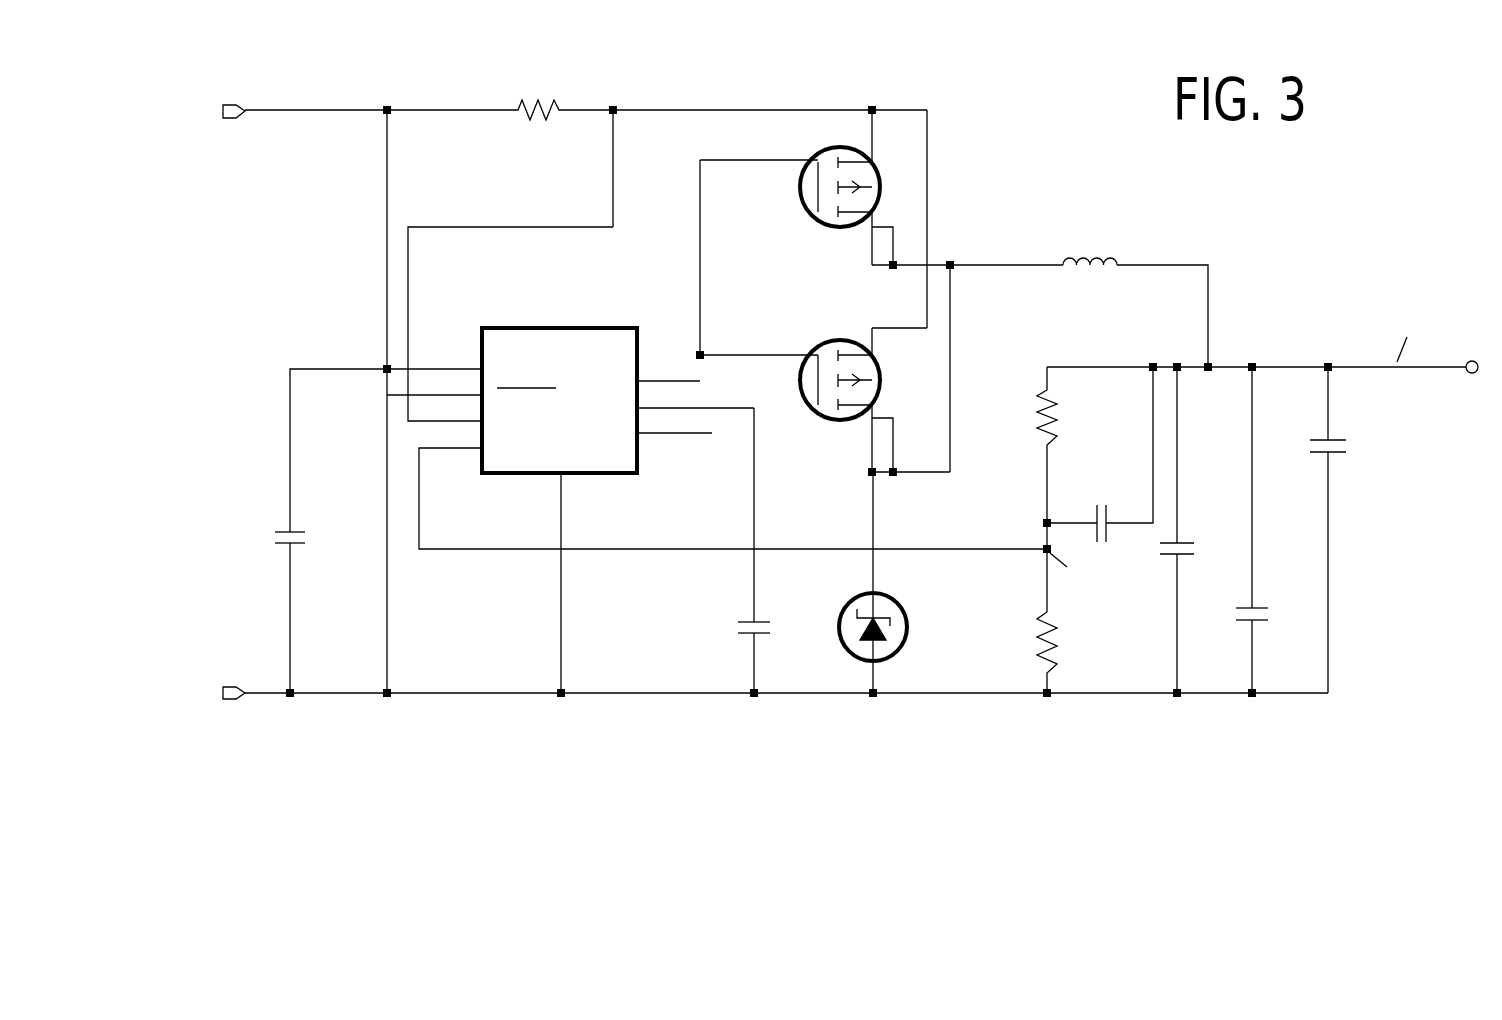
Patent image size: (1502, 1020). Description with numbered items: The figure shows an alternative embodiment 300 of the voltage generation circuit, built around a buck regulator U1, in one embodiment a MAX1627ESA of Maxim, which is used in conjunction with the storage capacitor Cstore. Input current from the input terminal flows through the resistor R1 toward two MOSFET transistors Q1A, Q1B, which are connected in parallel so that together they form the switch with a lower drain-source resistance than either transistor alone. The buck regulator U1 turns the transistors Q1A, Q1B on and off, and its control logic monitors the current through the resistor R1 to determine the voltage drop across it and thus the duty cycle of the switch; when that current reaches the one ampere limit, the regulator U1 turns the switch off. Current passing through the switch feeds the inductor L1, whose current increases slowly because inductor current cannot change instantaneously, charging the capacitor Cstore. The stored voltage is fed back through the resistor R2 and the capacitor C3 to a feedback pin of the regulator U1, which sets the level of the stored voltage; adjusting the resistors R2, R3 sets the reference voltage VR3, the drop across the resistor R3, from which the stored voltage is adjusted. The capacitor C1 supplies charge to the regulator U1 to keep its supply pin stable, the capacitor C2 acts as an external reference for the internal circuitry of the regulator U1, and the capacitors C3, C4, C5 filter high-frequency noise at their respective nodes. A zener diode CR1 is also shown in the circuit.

The alternative embodiment of the voltage generation circuit 300 is at (1067, 77).
The resistor R1 is at (537, 78).
The capacitor C1 is at (331, 531).
The buck regulator U1 is at (717, 495).
The MOSFET transistor Q1A is at (834, 187).
The MOSFET transistor Q1B is at (852, 389).
The inductor L1 is at (1135, 278).
The resistor R2 is at (1073, 445).
The capacitor C3 is at (1100, 454).
The reference voltage VR3 is at (1088, 567).
The resistor R3 is at (1065, 649).
The capacitor C4 is at (1197, 530).
The capacitor C5 is at (1273, 530).
The capacitor Cstore is at (1368, 530).
The capacitor C2 is at (775, 550).
The zener diode CR1 is at (883, 582).